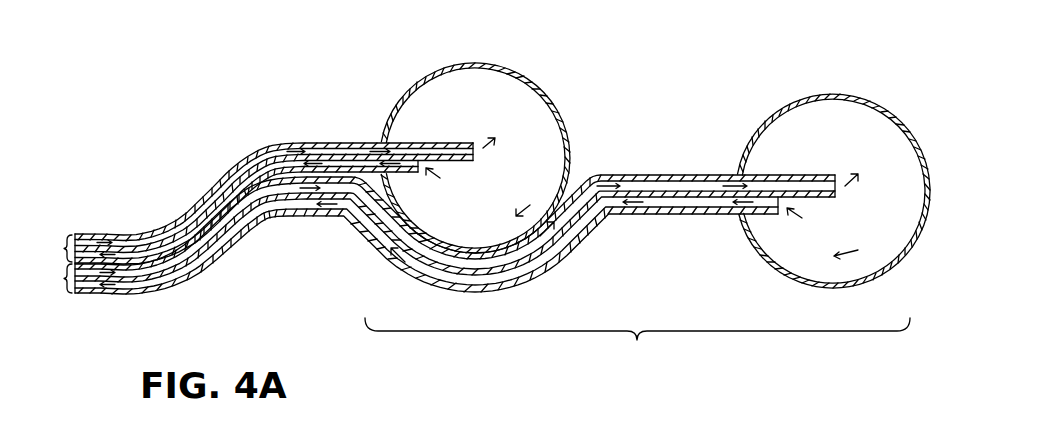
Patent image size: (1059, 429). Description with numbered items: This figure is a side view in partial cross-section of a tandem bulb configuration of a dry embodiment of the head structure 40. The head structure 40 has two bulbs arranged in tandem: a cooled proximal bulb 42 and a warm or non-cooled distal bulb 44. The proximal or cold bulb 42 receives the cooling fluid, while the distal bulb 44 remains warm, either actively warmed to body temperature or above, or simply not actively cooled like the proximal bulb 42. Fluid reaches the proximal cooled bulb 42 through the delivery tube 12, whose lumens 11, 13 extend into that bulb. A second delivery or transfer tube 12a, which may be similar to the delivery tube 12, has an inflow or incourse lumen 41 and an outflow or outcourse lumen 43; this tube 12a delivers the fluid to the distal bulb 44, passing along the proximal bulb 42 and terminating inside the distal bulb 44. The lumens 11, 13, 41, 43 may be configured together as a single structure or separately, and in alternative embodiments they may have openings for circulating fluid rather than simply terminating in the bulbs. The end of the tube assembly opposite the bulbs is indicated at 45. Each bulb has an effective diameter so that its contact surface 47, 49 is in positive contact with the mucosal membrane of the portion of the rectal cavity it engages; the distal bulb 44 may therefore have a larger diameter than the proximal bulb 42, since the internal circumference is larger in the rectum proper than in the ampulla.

The lumen 11 is at (96, 243).
The delivery tube 12 is at (73, 211).
The delivery tube 12a is at (52, 278).
The lumen 13 is at (182, 240).
The head structure 40 is at (637, 347).
The incourse lumen 41 is at (190, 266).
The proximal bulb 42 is at (563, 101).
The outcourse lumen 43 is at (163, 289).
The distal bulb 44 is at (897, 110).
The tube end 45 is at (82, 302).
The contact surface 47 is at (500, 65).
The contact surface 49 is at (839, 92).